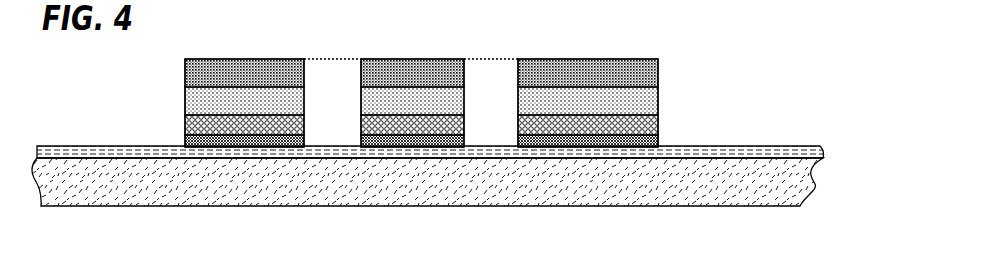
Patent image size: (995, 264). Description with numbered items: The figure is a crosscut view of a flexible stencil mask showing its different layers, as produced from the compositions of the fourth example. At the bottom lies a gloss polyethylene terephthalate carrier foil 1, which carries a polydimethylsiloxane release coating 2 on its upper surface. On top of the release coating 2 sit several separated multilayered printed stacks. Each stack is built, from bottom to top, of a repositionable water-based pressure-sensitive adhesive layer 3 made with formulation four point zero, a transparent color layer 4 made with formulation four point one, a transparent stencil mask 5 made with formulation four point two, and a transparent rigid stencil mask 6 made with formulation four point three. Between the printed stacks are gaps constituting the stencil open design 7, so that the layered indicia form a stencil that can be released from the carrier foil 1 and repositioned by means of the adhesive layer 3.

The gloss polyethylene terephthalate carrier foil 1 is at (793, 180).
The polydimethylsiloxane release coating 2 is at (791, 151).
The repositionable WB PSA layer 3 is at (199, 141).
The transparent color layer 4 is at (645, 125).
The transparent stencil mask 5 is at (197, 99).
The transparent rigid stencil mask 6 is at (648, 77).
The stencil open design 7 is at (323, 80).